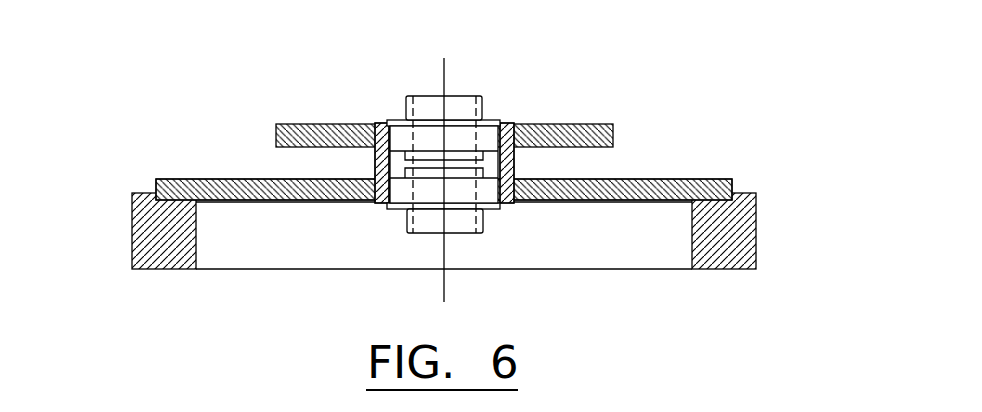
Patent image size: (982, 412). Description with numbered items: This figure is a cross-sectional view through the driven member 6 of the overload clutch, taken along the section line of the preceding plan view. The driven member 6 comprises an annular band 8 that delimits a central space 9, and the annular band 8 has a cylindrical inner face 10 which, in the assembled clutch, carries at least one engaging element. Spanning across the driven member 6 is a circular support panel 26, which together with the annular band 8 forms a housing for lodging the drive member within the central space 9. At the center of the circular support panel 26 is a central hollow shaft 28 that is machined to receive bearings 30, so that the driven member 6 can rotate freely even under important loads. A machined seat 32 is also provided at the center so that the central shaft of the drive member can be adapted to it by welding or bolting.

The driven member 6 is at (794, 174).
The annular band 8 is at (147, 222).
The central space 9 is at (577, 253).
The cylindrical inner face 10 is at (197, 252).
The circular support panel 26 is at (668, 179).
The central hollow shaft 28 is at (515, 168).
The bearings 30 is at (467, 98).
The machined seat 32 is at (378, 123).